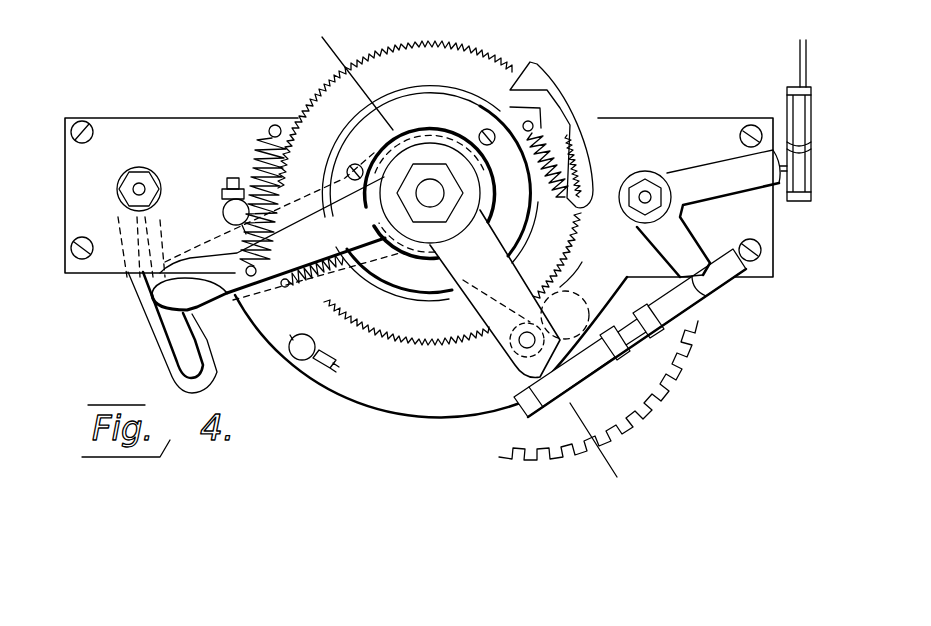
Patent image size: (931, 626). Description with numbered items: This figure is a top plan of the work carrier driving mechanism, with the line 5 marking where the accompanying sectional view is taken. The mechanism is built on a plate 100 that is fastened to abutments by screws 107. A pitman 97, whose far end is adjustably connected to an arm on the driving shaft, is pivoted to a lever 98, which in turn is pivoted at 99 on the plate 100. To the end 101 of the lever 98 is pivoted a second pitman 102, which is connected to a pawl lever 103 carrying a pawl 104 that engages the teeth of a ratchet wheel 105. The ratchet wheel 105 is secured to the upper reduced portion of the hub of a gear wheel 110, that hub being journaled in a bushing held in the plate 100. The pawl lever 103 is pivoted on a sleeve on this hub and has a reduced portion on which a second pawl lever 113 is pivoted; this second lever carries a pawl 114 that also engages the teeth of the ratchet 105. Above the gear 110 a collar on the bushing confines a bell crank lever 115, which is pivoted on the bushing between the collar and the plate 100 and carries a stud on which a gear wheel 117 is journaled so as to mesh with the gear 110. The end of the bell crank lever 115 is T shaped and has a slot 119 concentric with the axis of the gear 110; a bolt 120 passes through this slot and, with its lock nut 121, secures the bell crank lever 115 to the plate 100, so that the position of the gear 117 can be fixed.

The section line 5— 5 is at (472, 254).
The pitman 97 is at (800, 60).
The lever 98 is at (697, 168).
The pivot 99 is at (645, 196).
The plate 100 is at (419, 197).
The end of the lever 101 is at (670, 252).
The pitman 102 is at (640, 341).
The pawl lever 103 is at (503, 337).
The pawl 104 is at (562, 289).
The ratchet wheel 105 is at (429, 193).
The screws 107 is at (90, 124).
The gear wheel 110 is at (430, 193).
The second pawl lever 113 is at (272, 235).
The pawl 114 is at (305, 298).
The bell crank lever 115 is at (203, 293).
The gear wheel 117 is at (640, 426).
The slot 119 is at (173, 338).
The bolt 120 is at (136, 176).
The lock nut 121 is at (160, 190).